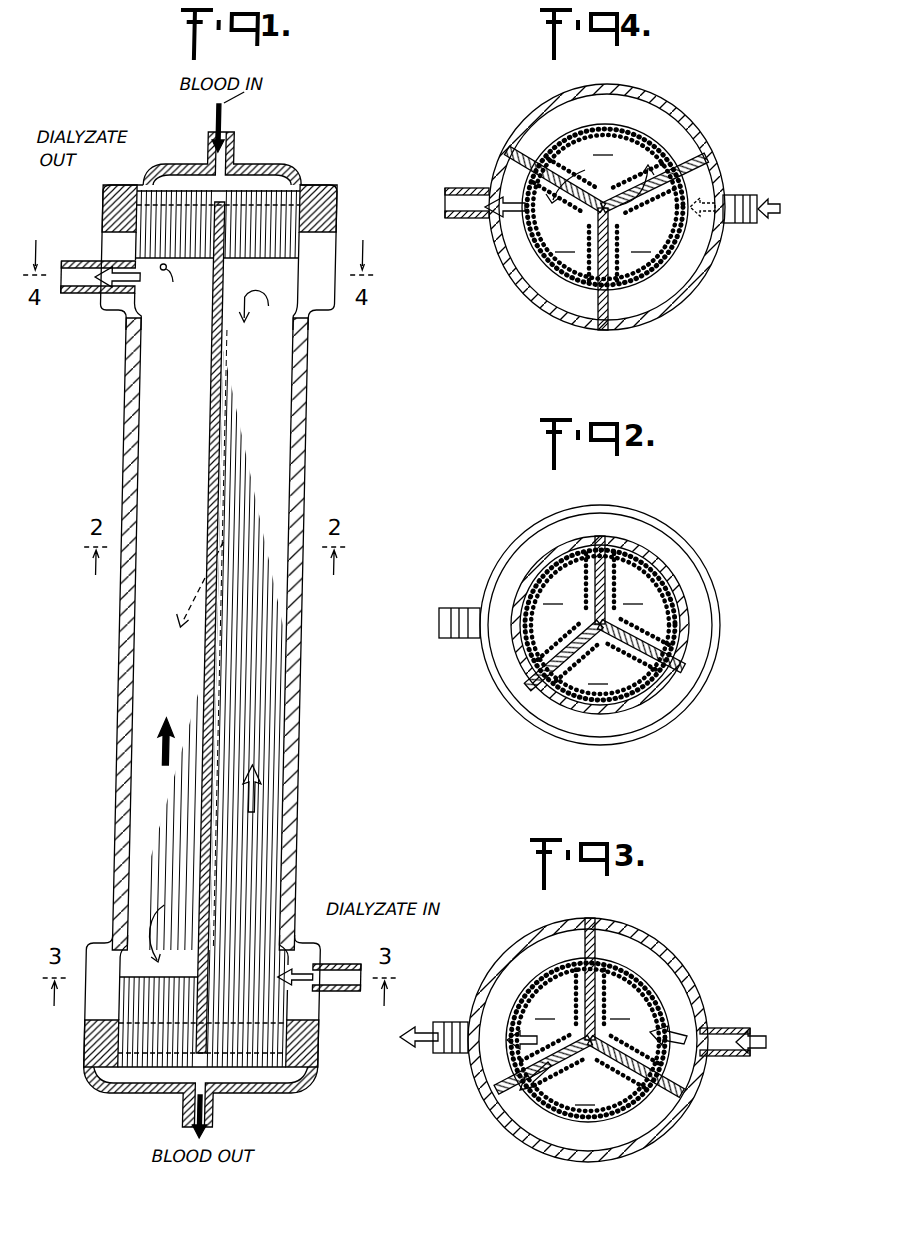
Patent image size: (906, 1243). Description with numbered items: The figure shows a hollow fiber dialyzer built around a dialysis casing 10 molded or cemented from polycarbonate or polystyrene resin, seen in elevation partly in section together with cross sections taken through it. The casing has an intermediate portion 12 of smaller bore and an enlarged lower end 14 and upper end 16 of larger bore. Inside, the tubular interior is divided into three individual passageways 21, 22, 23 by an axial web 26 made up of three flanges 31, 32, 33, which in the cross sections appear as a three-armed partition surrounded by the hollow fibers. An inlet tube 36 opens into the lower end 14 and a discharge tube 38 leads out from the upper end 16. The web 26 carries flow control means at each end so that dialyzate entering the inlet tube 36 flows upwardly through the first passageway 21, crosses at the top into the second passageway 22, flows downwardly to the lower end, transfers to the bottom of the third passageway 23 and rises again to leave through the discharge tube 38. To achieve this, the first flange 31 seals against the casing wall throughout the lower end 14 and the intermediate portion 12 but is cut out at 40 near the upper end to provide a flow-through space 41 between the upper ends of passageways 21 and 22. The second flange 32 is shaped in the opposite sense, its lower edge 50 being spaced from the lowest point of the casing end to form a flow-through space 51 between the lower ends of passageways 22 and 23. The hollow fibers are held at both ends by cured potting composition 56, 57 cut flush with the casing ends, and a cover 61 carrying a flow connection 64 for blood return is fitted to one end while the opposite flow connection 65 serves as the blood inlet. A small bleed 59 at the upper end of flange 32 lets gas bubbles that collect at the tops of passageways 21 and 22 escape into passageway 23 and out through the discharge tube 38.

In FIG. 1, the dialysis casing 10 is at (212, 634).
In FIG. 4, the dialysis casing 10 is at (620, 208).
In FIG. 2, the dialysis casing 10 is at (713, 553).
In FIG. 3, the dialysis casing 10 is at (597, 1029).
In FIG. 1, the intermediate portion 12 is at (305, 428).
In FIG. 1, the lower end 14 is at (211, 1011).
In FIG. 3, the lower end 14 is at (658, 948).
In FIG. 1, the upper end 16 is at (227, 225).
In FIG. 4, the upper end 16 is at (702, 172).
In FIG. 2, the upper end 16 is at (672, 540).
In FIG. 1, the first passageway 21 is at (272, 624).
In FIG. 4, the first passageway 21 is at (641, 238).
In FIG. 2, the first passageway 21 is at (633, 590).
In FIG. 3, the first passageway 21 is at (620, 1005).
In FIG. 4, the second passageway 22 is at (603, 141).
In FIG. 2, the second passageway 22 is at (598, 670).
In FIG. 3, the second passageway 22 is at (585, 1091).
In FIG. 1, the third passageway 23 is at (155, 613).
In FIG. 4, the third passageway 23 is at (565, 238).
In FIG. 2, the third passageway 23 is at (553, 590).
In FIG. 3, the third passageway 23 is at (545, 1005).
In FIG. 1, the axial web 26 is at (228, 381).
In FIG. 2, the axial web 26 is at (562, 698).
In FIG. 1, the first flange 31 is at (235, 517).
In FIG. 4, the first flange 31 is at (672, 150).
In FIG. 2, the first flange 31 is at (672, 634).
In FIG. 3, the first flange 31 is at (680, 1098).
In FIG. 1, the second flange 32 is at (160, 198).
In FIG. 4, the second flange 32 is at (531, 132).
In FIG. 2, the second flange 32 is at (547, 688).
In FIG. 3, the second flange 32 is at (506, 1070).
In FIG. 1, the third flange 33 is at (218, 480).
In FIG. 4, the third flange 33 is at (605, 328).
In FIG. 2, the third flange 33 is at (615, 552).
In FIG. 3, the third flange 33 is at (600, 952).
In FIG. 1, the inlet tube 36 is at (347, 992).
In FIG. 4, the inlet tube 36 is at (740, 230).
In FIG. 3, the inlet tube 36 is at (740, 1028).
In FIG. 1, the discharge tube 38 is at (66, 294).
In FIG. 4, the discharge tube 38 is at (466, 222).
In FIG. 2, the discharge tube 38 is at (452, 643).
In FIG. 3, the discharge tube 38 is at (453, 1019).
In FIG. 1, the cut-out 40 is at (293, 258).
In FIG. 1, the flow-through space 41 is at (278, 278).
In FIG. 1, the edge 50 is at (157, 923).
In FIG. 3, the edge 50 is at (530, 1082).
In FIG. 1, the flow-through space 51 is at (193, 968).
In FIG. 3, the flow-through space 51 is at (547, 1086).
In FIG. 1, the potting composition 56 is at (112, 1045).
In FIG. 1, the potting composition 57 is at (305, 190).
In FIG. 1, the bleed 59 is at (178, 285).
In FIG. 1, the cover 61 is at (147, 1092).
In FIG. 1, the flow connection 64 is at (226, 1106).
In FIG. 1, the flow connection 65 is at (232, 148).